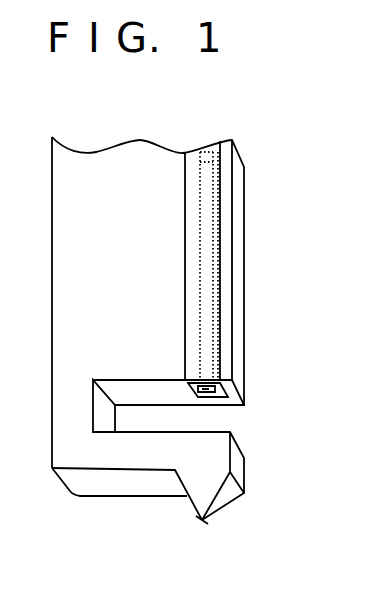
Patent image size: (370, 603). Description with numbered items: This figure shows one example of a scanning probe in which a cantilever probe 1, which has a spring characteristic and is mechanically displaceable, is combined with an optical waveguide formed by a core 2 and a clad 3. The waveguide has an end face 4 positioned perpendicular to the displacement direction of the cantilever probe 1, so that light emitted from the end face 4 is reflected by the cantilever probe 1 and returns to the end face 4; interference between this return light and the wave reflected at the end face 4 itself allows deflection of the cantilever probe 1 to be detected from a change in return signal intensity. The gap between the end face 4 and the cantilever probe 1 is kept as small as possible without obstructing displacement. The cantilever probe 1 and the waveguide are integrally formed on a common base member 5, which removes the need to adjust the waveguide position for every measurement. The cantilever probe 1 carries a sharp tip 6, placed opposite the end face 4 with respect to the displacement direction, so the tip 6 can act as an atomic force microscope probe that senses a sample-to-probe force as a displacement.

The cantilever probe 1 is at (138, 458).
The core 2 is at (192, 193).
The clad 3 is at (207, 182).
The waveguide end face 4 is at (208, 390).
The base member 5 is at (92, 260).
The sharp tip 6 is at (202, 520).